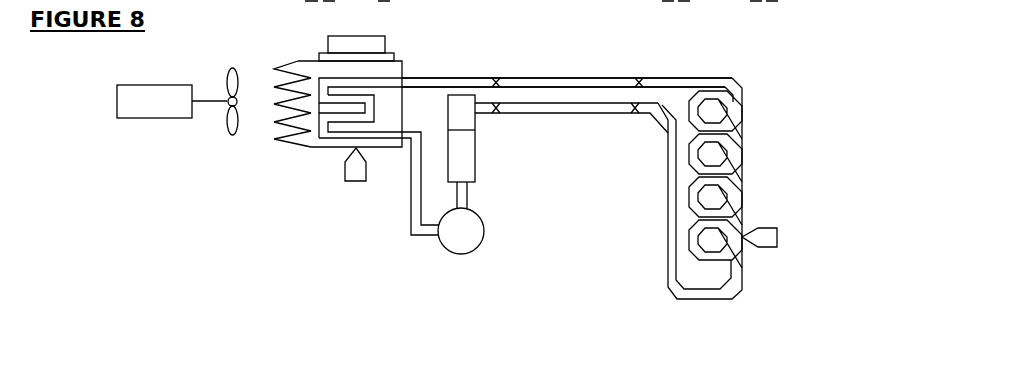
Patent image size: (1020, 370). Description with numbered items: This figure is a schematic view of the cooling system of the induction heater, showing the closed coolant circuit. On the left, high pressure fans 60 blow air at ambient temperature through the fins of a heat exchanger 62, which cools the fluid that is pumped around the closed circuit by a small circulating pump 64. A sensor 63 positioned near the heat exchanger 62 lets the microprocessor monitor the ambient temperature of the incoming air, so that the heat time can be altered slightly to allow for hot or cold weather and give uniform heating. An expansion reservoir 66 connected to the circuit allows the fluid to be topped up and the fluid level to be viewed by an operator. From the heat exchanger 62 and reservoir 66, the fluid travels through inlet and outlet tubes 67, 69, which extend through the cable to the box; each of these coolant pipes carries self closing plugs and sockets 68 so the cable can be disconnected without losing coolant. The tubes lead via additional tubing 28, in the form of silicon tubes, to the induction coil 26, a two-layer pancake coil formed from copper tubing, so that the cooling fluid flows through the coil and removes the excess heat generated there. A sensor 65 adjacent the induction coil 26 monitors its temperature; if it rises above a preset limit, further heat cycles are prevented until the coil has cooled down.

The induction coil 26 is at (747, 151).
The tubing 28 is at (695, 77).
The high pressure fans 60 is at (153, 122).
The heat exchanger 62 is at (293, 145).
The sensor 63 is at (347, 180).
The circulating pump 64 is at (486, 240).
The sensor 65 is at (780, 238).
The expansion reservoir 66 is at (477, 165).
The inlet tube 67 is at (575, 76).
The self closing plugs and sockets 68 is at (496, 76).
The outlet tube 69 is at (573, 115).